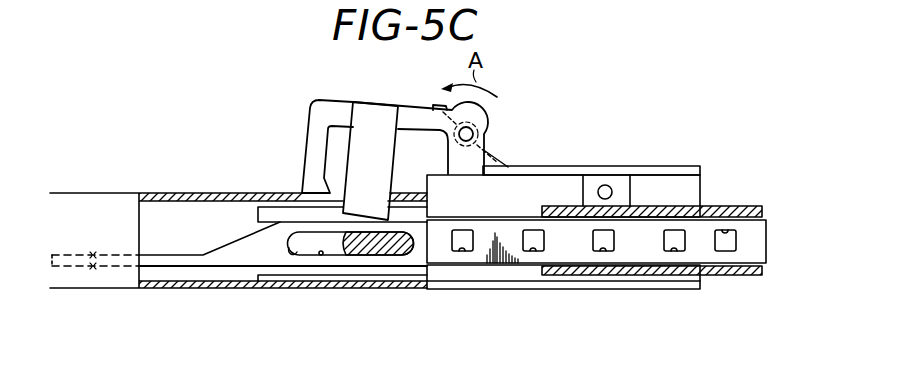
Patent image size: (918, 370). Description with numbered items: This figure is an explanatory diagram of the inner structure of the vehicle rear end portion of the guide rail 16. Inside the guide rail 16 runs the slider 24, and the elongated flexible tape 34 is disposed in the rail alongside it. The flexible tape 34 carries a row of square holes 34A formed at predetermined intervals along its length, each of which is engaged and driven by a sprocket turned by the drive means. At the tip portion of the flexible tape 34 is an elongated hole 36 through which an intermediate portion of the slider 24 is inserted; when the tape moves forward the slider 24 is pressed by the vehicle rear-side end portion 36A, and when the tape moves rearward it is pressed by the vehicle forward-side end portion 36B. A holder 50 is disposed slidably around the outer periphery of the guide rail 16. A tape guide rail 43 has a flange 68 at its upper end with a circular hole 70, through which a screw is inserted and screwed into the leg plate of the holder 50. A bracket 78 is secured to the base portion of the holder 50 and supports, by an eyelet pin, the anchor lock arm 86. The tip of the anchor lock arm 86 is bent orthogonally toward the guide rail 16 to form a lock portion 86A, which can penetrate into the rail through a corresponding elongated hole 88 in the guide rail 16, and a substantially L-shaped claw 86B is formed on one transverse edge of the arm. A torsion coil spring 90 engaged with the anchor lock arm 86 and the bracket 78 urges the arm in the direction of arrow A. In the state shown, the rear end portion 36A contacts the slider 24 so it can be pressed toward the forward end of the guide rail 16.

The guide rail 16 is at (172, 192).
The slider 24 is at (362, 247).
The flexible tape 34 is at (478, 272).
The square holes 34A is at (462, 255).
The elongated hole 36 is at (320, 256).
The vehicle rear-side end portion of the elongated hole 36A is at (407, 250).
The vehicle forward-side end portion of the elongated hole 36B is at (293, 256).
The tape guide rail 43 is at (584, 278).
The holder 50 is at (571, 173).
The flange 68 is at (626, 193).
The circular hole 70 is at (607, 184).
The bracket 78 is at (640, 163).
The anchor lock arm 86 is at (374, 96).
The lock portion 86A is at (315, 113).
The claw 86B is at (357, 203).
The elongated hole 88 is at (280, 194).
The torsion coil spring 90 is at (497, 160).